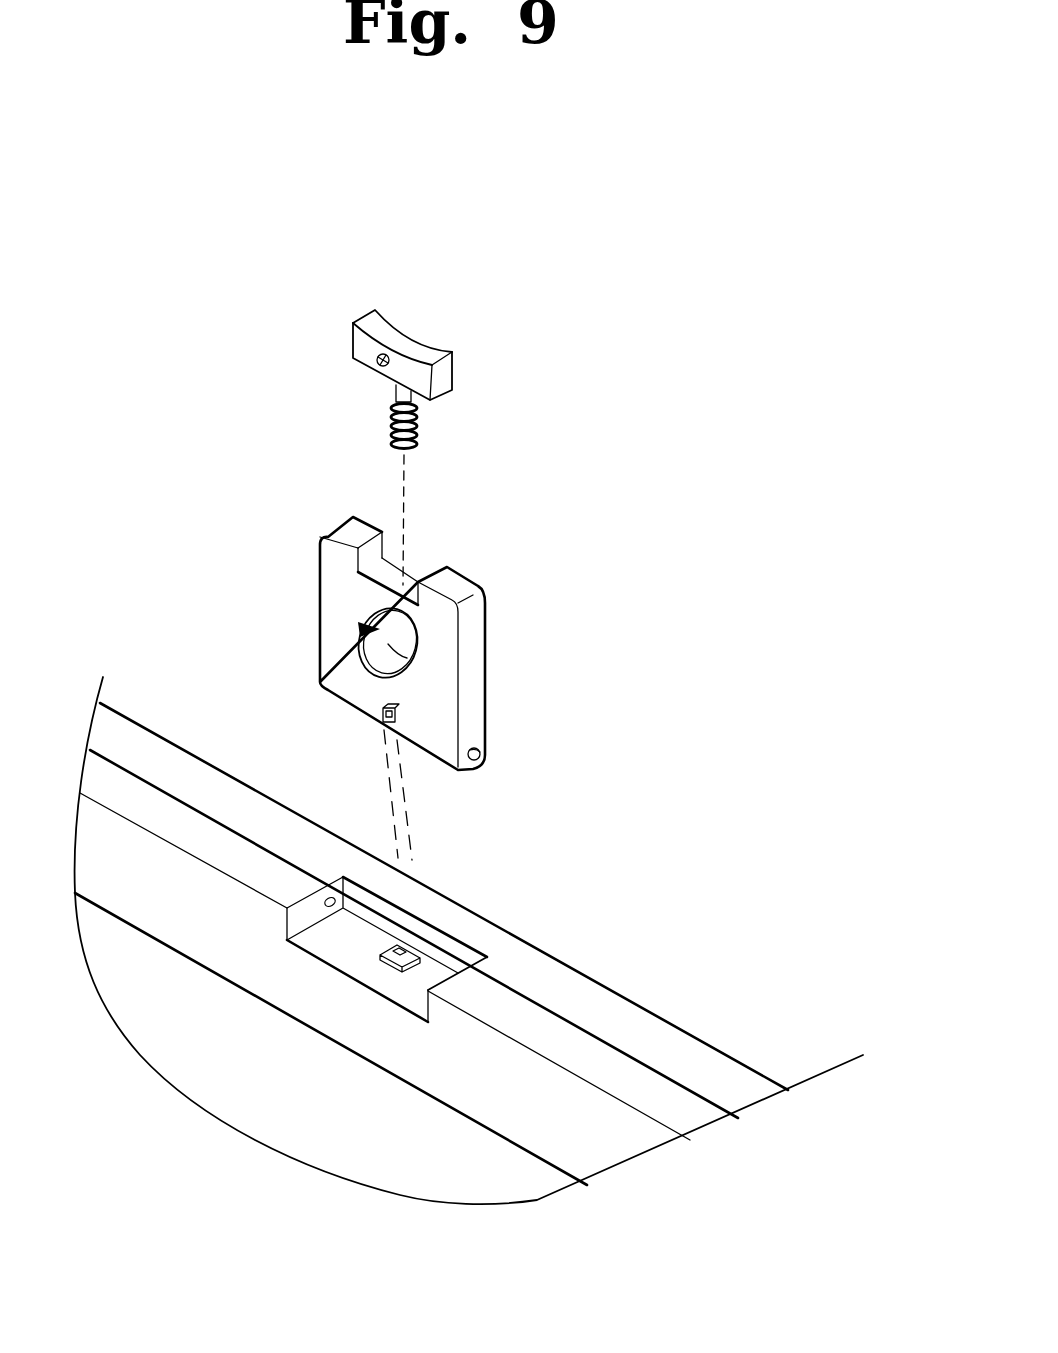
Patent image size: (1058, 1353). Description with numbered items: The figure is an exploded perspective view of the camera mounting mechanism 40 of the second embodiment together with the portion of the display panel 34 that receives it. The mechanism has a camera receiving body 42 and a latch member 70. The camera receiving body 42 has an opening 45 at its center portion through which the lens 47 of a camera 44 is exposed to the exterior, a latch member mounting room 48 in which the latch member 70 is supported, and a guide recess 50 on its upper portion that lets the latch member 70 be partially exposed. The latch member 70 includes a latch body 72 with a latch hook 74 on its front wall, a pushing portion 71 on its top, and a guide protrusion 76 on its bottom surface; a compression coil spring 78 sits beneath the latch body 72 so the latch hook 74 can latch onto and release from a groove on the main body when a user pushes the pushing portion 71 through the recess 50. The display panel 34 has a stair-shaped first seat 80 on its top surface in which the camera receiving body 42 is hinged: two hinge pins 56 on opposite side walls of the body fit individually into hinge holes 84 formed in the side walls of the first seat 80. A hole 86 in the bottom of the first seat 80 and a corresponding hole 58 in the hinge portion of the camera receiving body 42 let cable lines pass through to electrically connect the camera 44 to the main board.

The display panel 34 is at (469, 940).
The camera mounting mechanism 40 is at (433, 641).
The camera receiving body 42 is at (470, 622).
The camera 44 is at (360, 627).
The opening 45 is at (358, 637).
The lens 47 is at (413, 661).
The latch member mounting room 48 is at (402, 562).
The guide recess 50 is at (357, 561).
The hinge pins 56 is at (482, 757).
The hole 58 is at (382, 721).
The latch member 70 is at (449, 368).
The pushing portion 71 is at (402, 342).
The latch body 72 is at (450, 367).
The latch hook 74 is at (353, 357).
The guide protrusion 76 is at (397, 397).
The compression coil spring 78 is at (417, 437).
The first seat 80 is at (443, 975).
The hinge holes 84 is at (330, 899).
The hole 86 is at (407, 943).